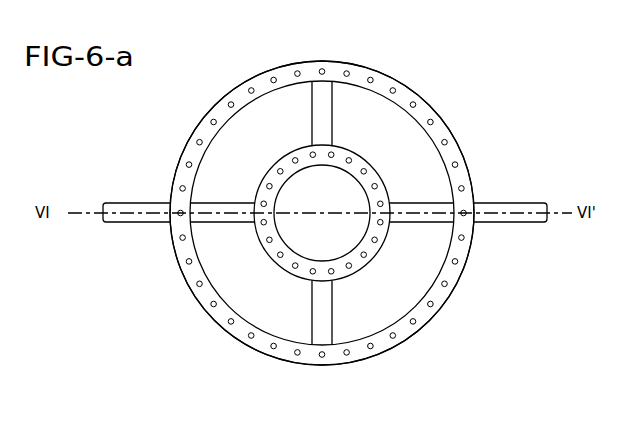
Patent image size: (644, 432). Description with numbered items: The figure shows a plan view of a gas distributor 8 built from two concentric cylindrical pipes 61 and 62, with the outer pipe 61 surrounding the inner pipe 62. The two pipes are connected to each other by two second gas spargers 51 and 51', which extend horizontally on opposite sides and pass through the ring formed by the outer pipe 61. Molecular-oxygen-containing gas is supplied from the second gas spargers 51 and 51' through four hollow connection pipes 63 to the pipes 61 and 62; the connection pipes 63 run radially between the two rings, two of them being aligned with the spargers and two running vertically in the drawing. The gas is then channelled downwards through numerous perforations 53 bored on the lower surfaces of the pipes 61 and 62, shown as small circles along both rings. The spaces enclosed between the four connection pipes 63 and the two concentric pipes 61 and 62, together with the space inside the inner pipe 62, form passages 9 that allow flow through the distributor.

The heat exchanger body 8 is at (435, 172).
The passages 9 is at (285, 103).
The second gas sparger 51 is at (132, 240).
The second gas sparger 51' is at (510, 233).
The perforations 53 is at (188, 163).
The cylindrical pipe 61 is at (237, 84).
The cylindrical pipe 62 is at (364, 157).
The hollow connection pipes 63 is at (220, 212).